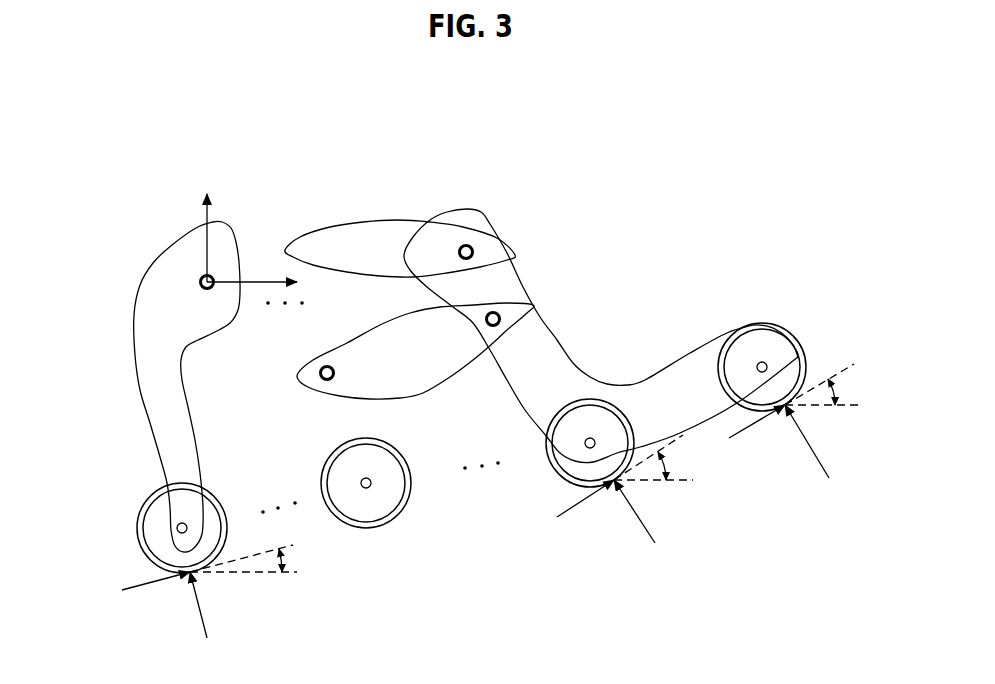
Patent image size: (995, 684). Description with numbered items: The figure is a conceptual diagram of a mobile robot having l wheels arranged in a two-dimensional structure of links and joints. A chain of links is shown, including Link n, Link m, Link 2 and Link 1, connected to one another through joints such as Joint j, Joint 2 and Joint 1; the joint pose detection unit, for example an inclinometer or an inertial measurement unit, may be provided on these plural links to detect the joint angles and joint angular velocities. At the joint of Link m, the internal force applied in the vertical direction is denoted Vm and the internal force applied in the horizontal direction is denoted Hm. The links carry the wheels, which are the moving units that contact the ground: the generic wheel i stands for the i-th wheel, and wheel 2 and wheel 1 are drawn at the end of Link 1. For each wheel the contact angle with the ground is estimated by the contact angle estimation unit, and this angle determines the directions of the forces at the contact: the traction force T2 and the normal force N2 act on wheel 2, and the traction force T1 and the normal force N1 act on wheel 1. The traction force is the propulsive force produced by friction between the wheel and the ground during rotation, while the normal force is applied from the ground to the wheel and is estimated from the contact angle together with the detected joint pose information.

The link Link n is at (149, 386).
The link Link m is at (198, 295).
The internal force in the vertical direction Vm is at (205, 225).
The internal force in the horizontal direction Hm is at (252, 271).
The link Link 2 is at (400, 248).
The link Link 1 is at (601, 336).
The joint Joint j is at (415, 351).
The joint Joint 2 is at (461, 246).
The joint Joint 1 is at (520, 311).
The wheel wheel i is at (364, 471).
The wheel wheel 2 is at (550, 443).
The traction force T2 is at (585, 511).
The normal force N2 is at (644, 522).
The wheel wheel 1 is at (762, 352).
The traction force T1 is at (757, 435).
The normal force N1 is at (814, 446).